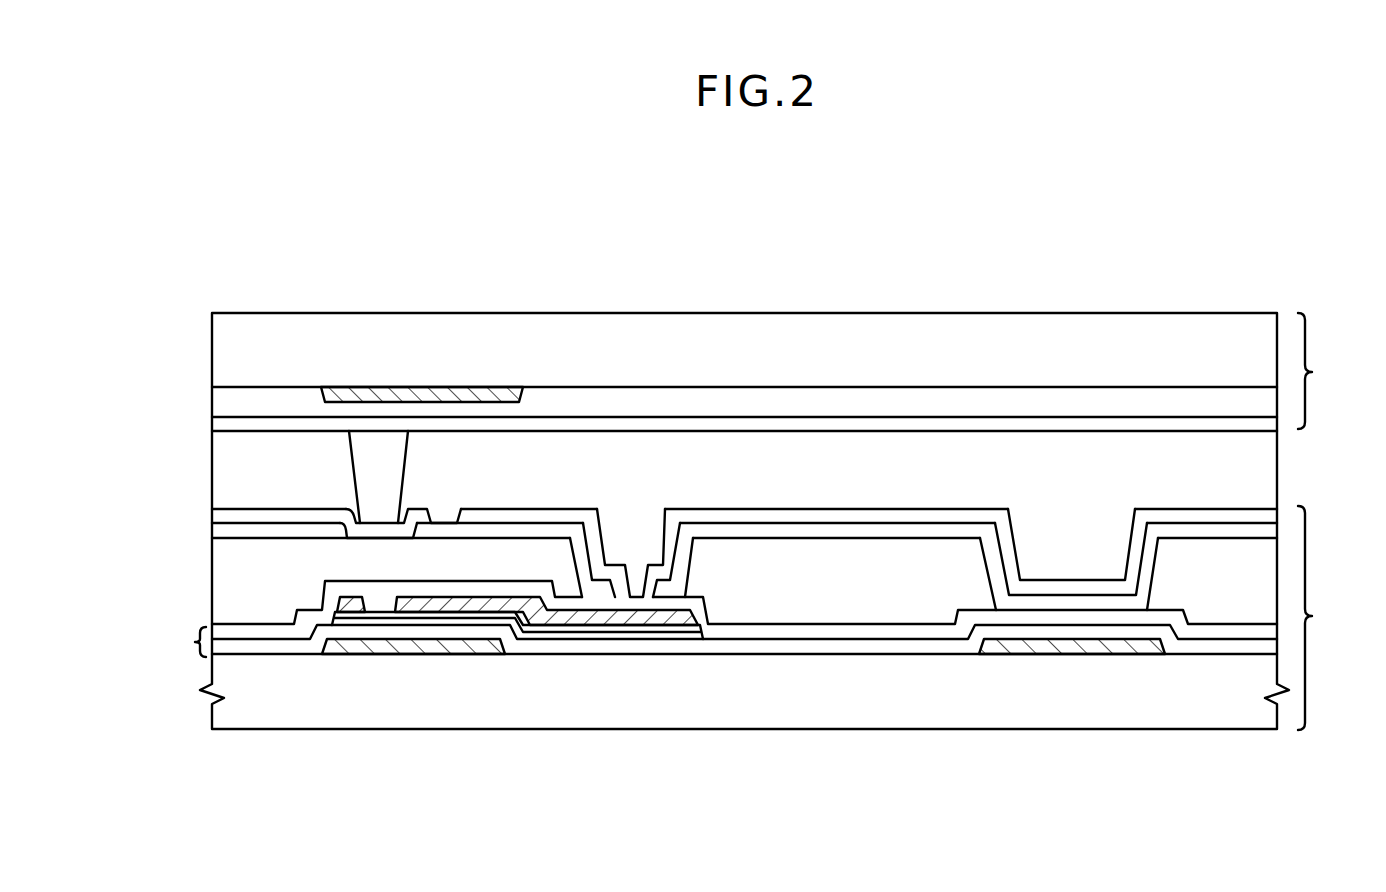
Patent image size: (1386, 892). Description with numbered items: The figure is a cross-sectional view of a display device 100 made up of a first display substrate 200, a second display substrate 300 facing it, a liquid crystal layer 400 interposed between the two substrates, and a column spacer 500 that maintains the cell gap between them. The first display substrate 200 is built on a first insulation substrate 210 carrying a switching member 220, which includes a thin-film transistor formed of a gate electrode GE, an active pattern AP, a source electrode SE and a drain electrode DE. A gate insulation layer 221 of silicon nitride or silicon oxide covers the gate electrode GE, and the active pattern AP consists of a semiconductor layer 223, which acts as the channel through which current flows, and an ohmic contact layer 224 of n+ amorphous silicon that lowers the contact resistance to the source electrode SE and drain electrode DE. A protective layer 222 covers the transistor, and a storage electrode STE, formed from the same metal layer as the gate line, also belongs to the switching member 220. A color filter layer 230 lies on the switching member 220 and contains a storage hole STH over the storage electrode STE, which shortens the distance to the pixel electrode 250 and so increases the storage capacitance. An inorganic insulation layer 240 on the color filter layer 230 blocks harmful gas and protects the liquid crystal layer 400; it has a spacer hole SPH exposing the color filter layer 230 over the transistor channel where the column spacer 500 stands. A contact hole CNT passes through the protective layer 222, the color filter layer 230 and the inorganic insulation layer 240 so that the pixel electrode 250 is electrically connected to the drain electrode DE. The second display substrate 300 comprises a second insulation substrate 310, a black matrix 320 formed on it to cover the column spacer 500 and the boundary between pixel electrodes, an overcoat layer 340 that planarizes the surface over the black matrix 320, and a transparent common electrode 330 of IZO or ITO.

The display device 100 is at (724, 276).
The first display substrate 200 is at (1334, 618).
The first insulation substrate 210 is at (1169, 699).
The switching member 220 is at (172, 641).
The gate insulation layer 221 is at (249, 648).
The protective layer 222 is at (285, 633).
The semiconductor layer 223 is at (592, 637).
The ohmic contact layer 224 is at (651, 630).
The color filter layer 230 is at (912, 598).
The inorganic insulation layer 240 is at (836, 530).
The pixel electrode 250 is at (760, 512).
The second display substrate 300 is at (1334, 371).
The second insulation substrate 310 is at (898, 352).
The black matrix 320 is at (473, 390).
The common electrode 330 is at (1052, 420).
The overcoat layer 340 is at (1168, 398).
The liquid crystal layer 400 is at (1270, 468).
The column spacer 500 is at (382, 460).
The gate electrode GE is at (425, 648).
The source electrode SE is at (348, 603).
The drain electrode DE is at (483, 612).
The active pattern AP is at (517, 726).
The storage electrode STE is at (1052, 648).
The spacer hole SPH is at (347, 520).
The contact hole CNT is at (632, 524).
The storage hole STH is at (988, 560).